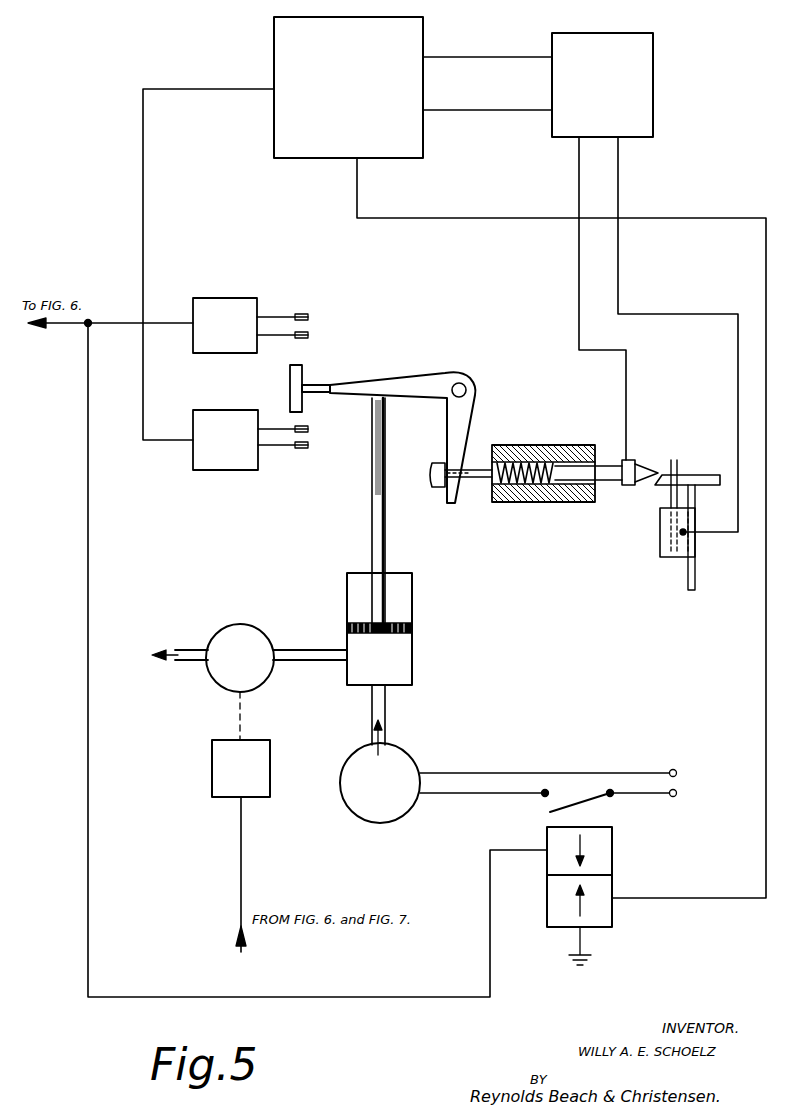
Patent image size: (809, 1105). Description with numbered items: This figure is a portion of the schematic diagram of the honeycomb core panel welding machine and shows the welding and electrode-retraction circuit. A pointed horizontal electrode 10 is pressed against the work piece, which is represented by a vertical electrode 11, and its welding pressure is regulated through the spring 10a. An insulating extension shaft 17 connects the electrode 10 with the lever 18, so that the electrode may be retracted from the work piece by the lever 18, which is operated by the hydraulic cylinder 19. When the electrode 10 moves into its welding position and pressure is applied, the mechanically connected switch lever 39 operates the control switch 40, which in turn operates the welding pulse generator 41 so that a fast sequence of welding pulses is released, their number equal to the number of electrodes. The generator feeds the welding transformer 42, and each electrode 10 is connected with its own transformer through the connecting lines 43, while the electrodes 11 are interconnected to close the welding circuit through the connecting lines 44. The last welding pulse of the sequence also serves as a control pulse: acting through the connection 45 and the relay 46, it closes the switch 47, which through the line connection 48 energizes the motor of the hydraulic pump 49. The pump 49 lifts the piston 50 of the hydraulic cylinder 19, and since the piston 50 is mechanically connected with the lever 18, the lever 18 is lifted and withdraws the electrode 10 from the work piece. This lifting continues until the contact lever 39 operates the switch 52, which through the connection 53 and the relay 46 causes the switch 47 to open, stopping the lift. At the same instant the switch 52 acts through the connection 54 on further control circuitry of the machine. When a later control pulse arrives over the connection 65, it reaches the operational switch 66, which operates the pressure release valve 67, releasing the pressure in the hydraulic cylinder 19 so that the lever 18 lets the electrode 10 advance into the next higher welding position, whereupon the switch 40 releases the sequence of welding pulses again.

The horizontal electrode 10 is at (610, 466).
The spring 10a is at (520, 445).
The vertical electrode 11 is at (676, 474).
The insulating extension shaft 17 is at (478, 483).
The lever 18 is at (425, 380).
The hydraulic cylinder 19 is at (412, 670).
The switch lever 39 is at (300, 373).
The control switch 40 is at (218, 462).
The welding pulse generator 41 is at (420, 36).
The welding transformer 42 is at (646, 42).
The connecting lines 43 is at (580, 293).
The connecting lines 44 is at (619, 288).
The connection 45 is at (435, 218).
The relay 46 is at (612, 864).
The switch 47 is at (545, 804).
The line connection 48 is at (683, 783).
The hydraulic pump 49 is at (368, 818).
The piston 50 is at (412, 626).
The switch 52 is at (228, 308).
The connection 53 is at (88, 412).
The connection 54 is at (73, 328).
The connection 65 is at (240, 871).
The operational switch 66 is at (220, 782).
The pressure release valve 67 is at (258, 632).